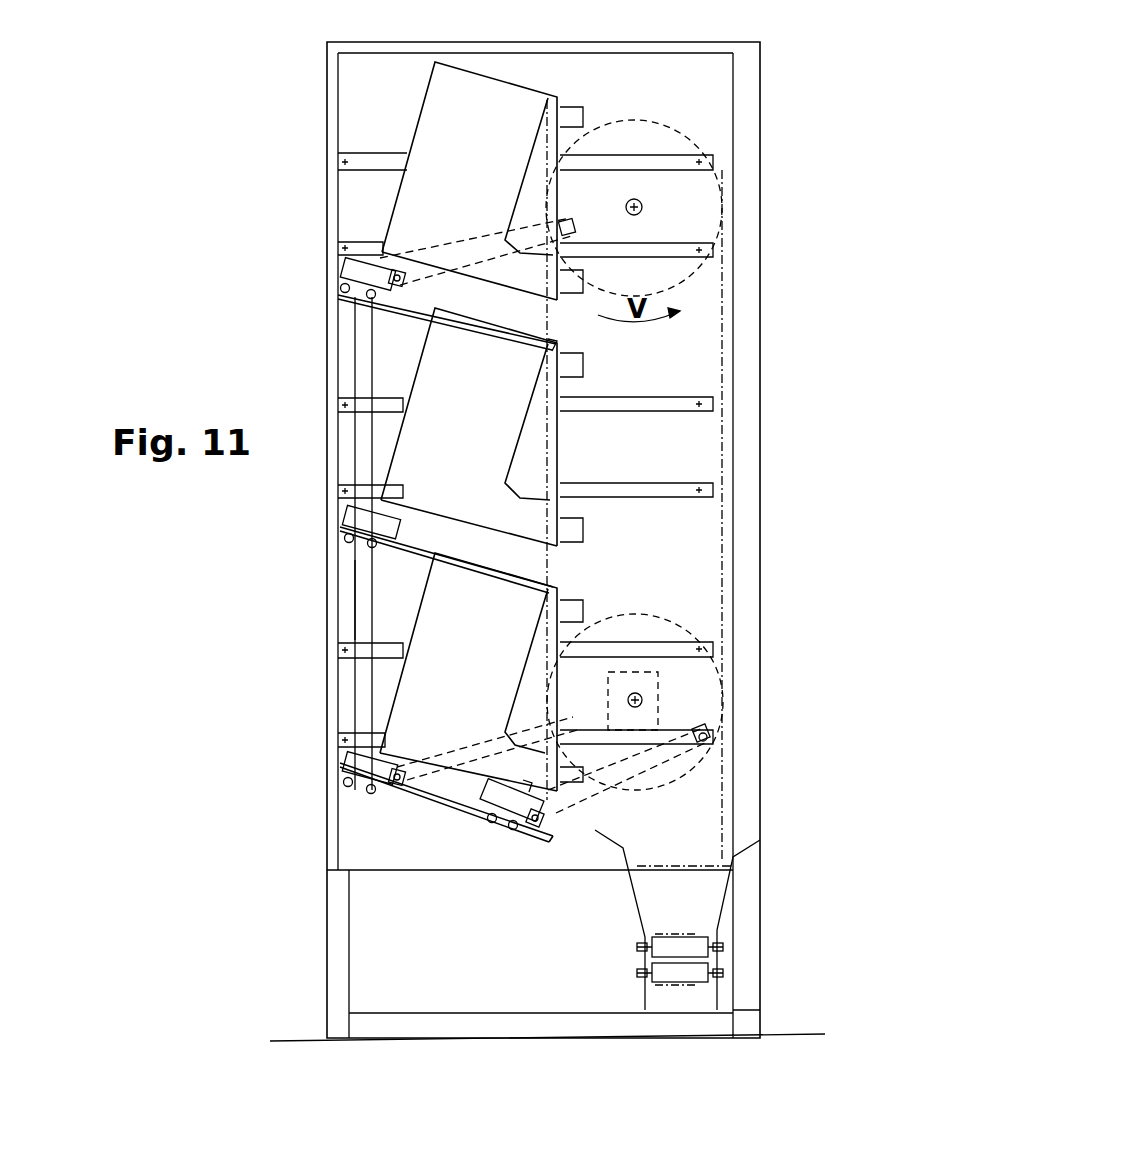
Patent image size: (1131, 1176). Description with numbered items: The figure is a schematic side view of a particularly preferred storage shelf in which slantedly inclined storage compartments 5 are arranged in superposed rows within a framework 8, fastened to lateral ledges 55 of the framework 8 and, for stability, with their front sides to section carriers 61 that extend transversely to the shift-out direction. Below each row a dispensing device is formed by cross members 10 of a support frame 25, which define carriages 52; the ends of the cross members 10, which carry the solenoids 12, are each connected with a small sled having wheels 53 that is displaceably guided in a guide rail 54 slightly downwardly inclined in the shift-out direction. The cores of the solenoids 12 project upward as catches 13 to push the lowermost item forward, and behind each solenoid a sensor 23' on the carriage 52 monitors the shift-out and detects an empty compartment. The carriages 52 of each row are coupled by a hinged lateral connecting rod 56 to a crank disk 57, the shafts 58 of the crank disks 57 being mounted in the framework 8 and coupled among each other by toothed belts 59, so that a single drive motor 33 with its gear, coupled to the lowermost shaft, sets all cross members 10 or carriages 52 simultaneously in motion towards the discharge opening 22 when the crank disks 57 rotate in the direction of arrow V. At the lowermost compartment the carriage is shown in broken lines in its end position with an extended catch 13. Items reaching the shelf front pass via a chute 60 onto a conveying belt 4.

The conveying belt 4 is at (688, 933).
The storage compartments 5 is at (458, 90).
The framework 8 is at (322, 110).
The cross members 10 is at (345, 263).
The solenoids 12 is at (367, 252).
The catches 13 is at (595, 830).
The discharge opening 22 is at (538, 320).
The sensor 23' is at (393, 757).
The support frame 25 is at (357, 597).
The drive motor 33 is at (655, 707).
The carriages 52 is at (345, 280).
The wheels 53 is at (372, 295).
The guide rail 54 is at (427, 315).
The lateral ledges 55 is at (673, 247).
The connecting rod 56 is at (477, 250).
The crank disk 57 is at (710, 180).
The shafts 58 is at (645, 208).
The toothed belts 59 is at (550, 630).
The chute 60 is at (615, 830).
The section carriers 61 is at (577, 270).